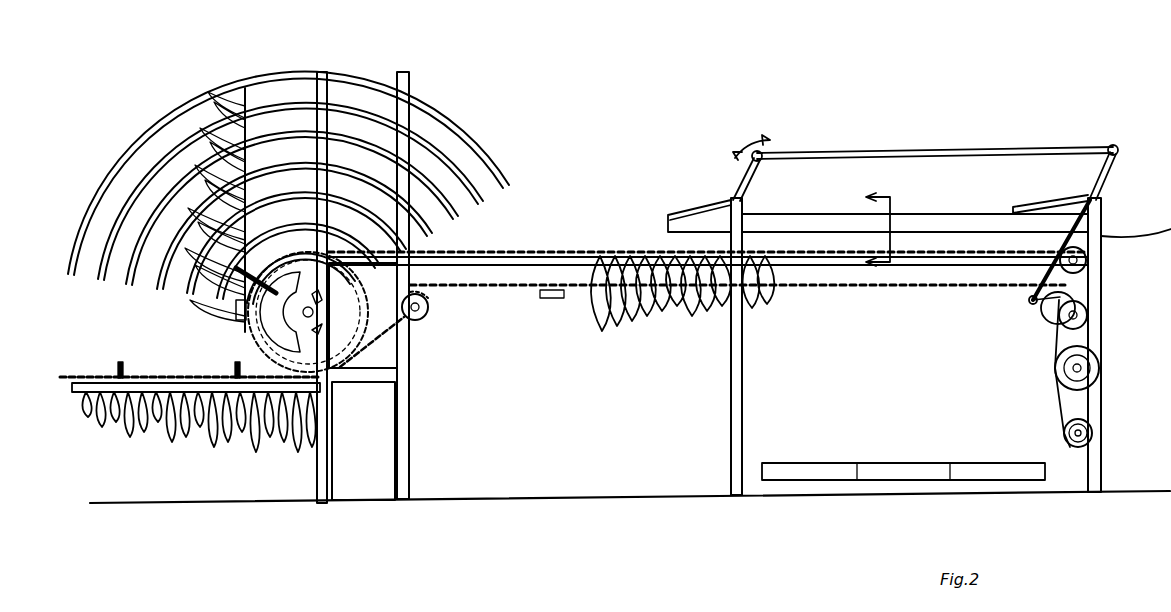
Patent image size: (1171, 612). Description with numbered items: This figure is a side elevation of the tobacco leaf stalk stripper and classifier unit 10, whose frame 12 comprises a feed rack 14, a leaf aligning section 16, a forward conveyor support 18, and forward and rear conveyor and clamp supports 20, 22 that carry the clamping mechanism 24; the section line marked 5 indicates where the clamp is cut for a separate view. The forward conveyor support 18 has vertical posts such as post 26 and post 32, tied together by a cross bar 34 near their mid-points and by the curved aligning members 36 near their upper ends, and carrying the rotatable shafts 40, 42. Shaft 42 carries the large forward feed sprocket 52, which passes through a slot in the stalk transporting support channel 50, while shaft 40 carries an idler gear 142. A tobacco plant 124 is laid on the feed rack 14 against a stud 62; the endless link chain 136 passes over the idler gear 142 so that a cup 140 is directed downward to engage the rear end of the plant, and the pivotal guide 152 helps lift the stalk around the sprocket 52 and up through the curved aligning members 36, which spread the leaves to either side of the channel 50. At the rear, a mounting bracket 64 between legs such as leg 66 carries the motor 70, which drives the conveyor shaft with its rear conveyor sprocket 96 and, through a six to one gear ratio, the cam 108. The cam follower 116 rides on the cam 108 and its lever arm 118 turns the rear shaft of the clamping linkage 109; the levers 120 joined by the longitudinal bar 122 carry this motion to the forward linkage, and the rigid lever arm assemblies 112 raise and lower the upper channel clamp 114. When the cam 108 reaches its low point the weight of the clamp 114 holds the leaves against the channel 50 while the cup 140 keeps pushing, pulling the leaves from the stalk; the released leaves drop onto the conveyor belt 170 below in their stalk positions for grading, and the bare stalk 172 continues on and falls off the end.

The tobacco leaf stalk stripper and classifier unit 10 is at (658, 136).
The frame 12 is at (588, 380).
The feed rack 14 is at (112, 439).
The leaf aligning section 16 is at (383, 58).
The forward conveyor support 18 is at (456, 366).
The forward conveyor and clamp support 20 is at (708, 448).
The rear conveyor and clamp support 22 is at (1112, 368).
The clamping mechanism 24 is at (872, 134).
The post 26 is at (408, 452).
The post 32 is at (320, 464).
The cross bar 34 is at (386, 372).
The curved aligning members 36 is at (484, 178).
The rotatable shaft 40 is at (420, 322).
The rotatable shaft 42 is at (300, 318).
The stalk transporting support channel 50 is at (522, 257).
The forward feed sprocket 52 is at (345, 308).
The stud 62 is at (128, 360).
The mounting bracket 64 is at (1068, 456).
The leg 66 is at (1096, 466).
The motor 70 is at (1066, 428).
The rear conveyor sprocket 96 is at (1086, 268).
The cam 108 is at (1082, 300).
The clamping mechanism linkage 109 is at (698, 178).
The rigid lever arm assembly 112 is at (680, 213).
The upper channel clamp 114 is at (824, 196).
The cam follower 116 is at (1031, 304).
The lever arm 118 is at (1030, 292).
The lever 120 is at (750, 168).
The longitudinal bar 122 is at (1010, 130).
The tobacco plant 124 is at (640, 245).
The endless link chain 136 is at (514, 290).
The cup 140 is at (238, 328).
The idler gear 142 is at (428, 300).
The pivotal guide 152 is at (248, 278).
The conveyor belt 170 is at (874, 462).
The stalk 172 is at (1150, 240).
The section line 5- 5 is at (869, 235).